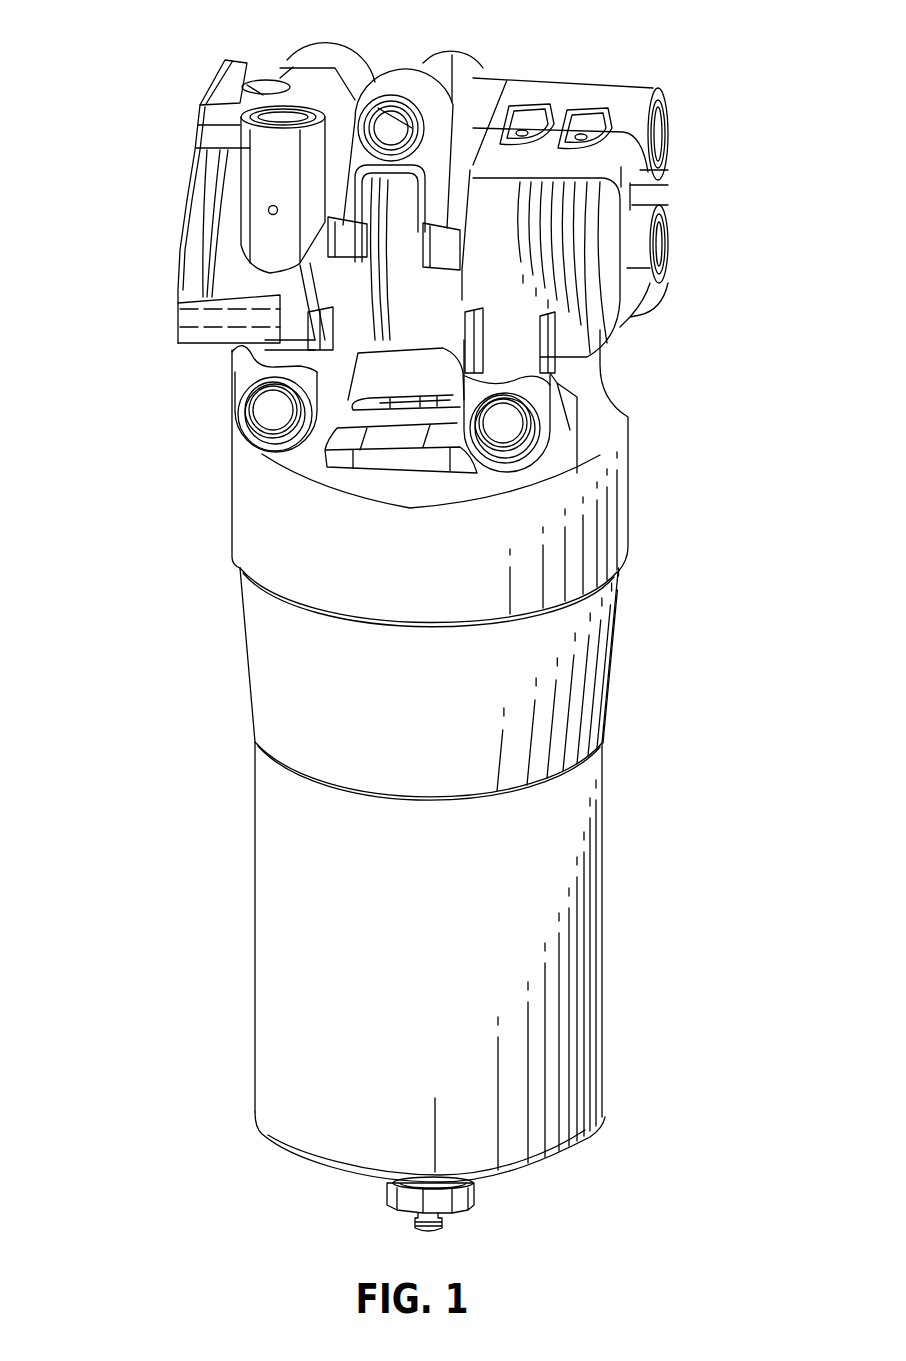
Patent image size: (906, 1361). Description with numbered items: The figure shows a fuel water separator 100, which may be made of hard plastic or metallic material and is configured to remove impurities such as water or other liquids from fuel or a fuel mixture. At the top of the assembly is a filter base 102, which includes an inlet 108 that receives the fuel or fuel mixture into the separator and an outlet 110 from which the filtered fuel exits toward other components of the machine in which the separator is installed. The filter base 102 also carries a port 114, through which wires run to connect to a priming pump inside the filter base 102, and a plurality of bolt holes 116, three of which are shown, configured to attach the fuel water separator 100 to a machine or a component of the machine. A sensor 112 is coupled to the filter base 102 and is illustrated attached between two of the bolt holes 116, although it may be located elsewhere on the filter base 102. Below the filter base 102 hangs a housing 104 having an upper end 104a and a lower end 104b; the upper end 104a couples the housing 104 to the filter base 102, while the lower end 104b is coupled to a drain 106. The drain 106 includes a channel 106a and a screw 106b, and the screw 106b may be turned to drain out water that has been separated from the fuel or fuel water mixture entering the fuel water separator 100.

The fuel water separator 100 is at (660, 62).
The filter base 102 is at (228, 58).
The housing 104 is at (255, 1110).
The upper end 104a is at (612, 651).
The lower end 104b is at (604, 983).
The drain 106 is at (385, 1185).
The channel 106a is at (435, 1236).
The screw 106b is at (468, 1203).
The inlet 108 is at (663, 137).
The outlet 110 is at (661, 248).
The sensor 112 is at (458, 467).
The port 114 is at (276, 92).
The bolt holes 116 is at (393, 104).